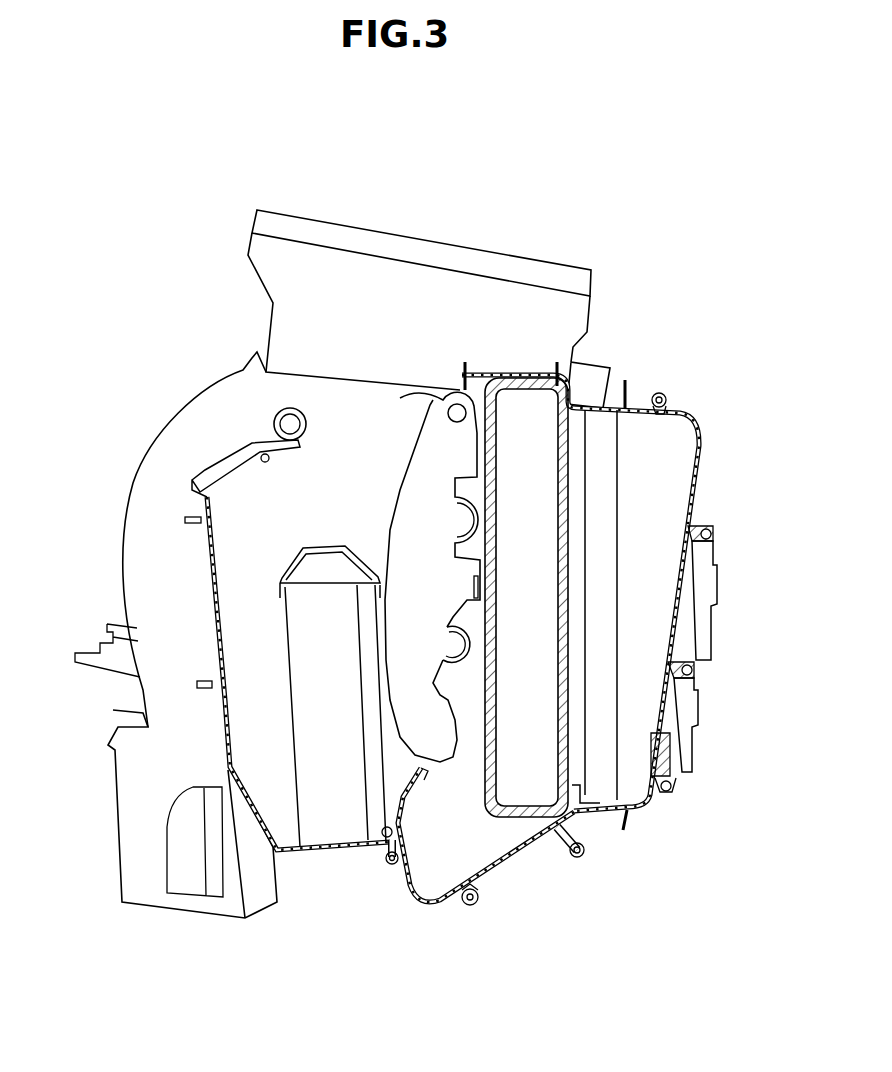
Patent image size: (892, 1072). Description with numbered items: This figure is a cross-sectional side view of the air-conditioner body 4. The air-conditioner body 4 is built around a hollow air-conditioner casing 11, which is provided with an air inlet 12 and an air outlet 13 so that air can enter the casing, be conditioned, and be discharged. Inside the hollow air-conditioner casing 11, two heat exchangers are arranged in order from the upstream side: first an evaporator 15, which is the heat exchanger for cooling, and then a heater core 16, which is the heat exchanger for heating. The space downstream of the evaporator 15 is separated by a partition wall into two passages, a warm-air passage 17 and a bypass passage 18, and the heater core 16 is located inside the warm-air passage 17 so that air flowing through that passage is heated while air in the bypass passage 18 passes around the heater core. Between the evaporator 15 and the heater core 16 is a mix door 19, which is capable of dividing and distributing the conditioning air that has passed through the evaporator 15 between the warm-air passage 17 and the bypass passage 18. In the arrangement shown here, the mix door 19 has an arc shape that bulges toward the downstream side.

The air-conditioner body 4 is at (658, 342).
The air-conditioner casing 11 is at (637, 388).
The air inlet 12 is at (715, 657).
The air outlet 13 is at (438, 245).
The evaporator 15 is at (537, 790).
The heater core 16 is at (332, 823).
The warm-air passage 17 is at (388, 707).
The bypass passage 18 is at (380, 470).
The mix door 19 is at (417, 645).